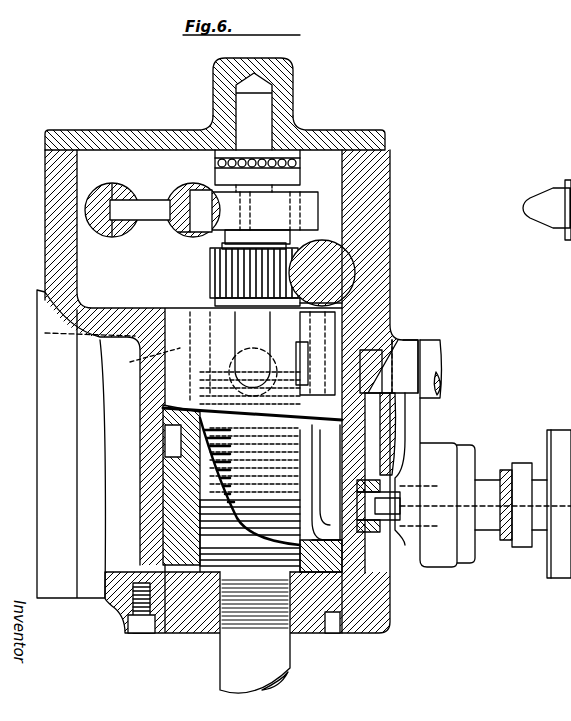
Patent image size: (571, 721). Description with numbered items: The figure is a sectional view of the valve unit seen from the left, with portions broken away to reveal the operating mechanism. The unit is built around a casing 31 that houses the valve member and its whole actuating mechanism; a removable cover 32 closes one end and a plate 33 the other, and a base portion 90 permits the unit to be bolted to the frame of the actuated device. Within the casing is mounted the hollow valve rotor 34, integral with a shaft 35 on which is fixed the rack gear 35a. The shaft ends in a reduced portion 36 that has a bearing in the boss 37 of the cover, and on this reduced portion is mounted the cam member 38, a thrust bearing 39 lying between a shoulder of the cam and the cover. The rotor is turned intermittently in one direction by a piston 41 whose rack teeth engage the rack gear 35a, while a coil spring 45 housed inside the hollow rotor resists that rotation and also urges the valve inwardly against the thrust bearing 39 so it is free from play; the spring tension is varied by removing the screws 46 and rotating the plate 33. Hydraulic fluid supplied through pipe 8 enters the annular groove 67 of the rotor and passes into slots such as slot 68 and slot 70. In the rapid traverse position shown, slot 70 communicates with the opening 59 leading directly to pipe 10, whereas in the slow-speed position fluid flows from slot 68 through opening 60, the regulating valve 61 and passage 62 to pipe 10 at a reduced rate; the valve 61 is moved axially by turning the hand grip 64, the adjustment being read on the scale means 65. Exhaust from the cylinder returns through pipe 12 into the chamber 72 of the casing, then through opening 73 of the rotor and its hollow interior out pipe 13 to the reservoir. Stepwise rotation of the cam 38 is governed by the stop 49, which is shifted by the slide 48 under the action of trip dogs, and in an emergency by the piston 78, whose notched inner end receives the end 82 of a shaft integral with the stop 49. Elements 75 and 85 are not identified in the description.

The pipe 8 is at (305, 440).
The pipe 10 is at (430, 352).
The pipe 12 is at (255, 371).
The pipe 13 is at (255, 632).
The casing 31 is at (386, 197).
The cover 32 is at (345, 136).
The plate 33 is at (212, 633).
The valve rotor 34 is at (340, 332).
The shaft 35 is at (225, 303).
The rack gear 35a is at (213, 266).
The reduced portion 36 is at (262, 110).
The boss 37 is at (214, 99).
The cam member 38 is at (292, 200).
The thrust bearing 39 is at (228, 152).
The piston 41 is at (335, 265).
The coil spring 45 is at (250, 570).
The screws 46 is at (140, 632).
The slide 48 is at (180, 234).
The stop 49 is at (205, 191).
The opening 59 is at (398, 352).
The opening 60 is at (380, 486).
The regulating valve 61 is at (386, 507).
The passage 62 is at (382, 420).
The hand grip 64 is at (553, 580).
The scale means 65 is at (508, 542).
The annular groove 67 is at (165, 455).
The slot 68 is at (327, 526).
The slot 70 is at (321, 358).
The chamber 72 is at (345, 306).
The opening 73 is at (160, 364).
The spindle 75 is at (252, 350).
The piston 78 is at (115, 192).
The end 82 is at (128, 200).
The pin 85 is at (560, 255).
The base portion 90 is at (42, 495).